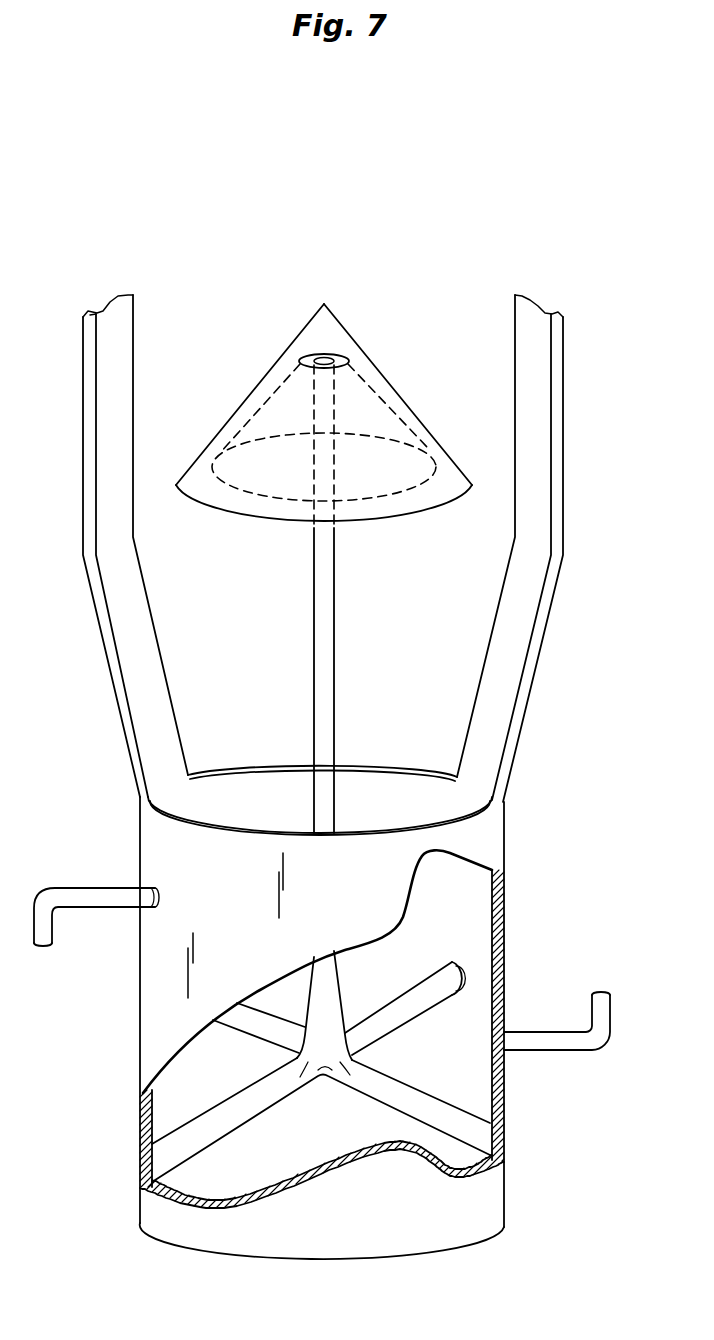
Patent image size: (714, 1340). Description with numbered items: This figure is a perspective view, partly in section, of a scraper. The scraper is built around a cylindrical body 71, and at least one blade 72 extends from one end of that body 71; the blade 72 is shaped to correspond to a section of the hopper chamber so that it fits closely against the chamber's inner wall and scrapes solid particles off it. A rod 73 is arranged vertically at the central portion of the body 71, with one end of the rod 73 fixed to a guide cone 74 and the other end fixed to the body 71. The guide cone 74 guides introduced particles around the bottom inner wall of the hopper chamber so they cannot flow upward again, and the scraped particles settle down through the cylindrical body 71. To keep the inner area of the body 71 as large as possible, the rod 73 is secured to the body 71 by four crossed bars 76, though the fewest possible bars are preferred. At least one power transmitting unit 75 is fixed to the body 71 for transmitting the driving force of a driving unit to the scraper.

The cylindrical body 71 is at (153, 1000).
The blade 72 is at (557, 500).
The rod 73 is at (325, 620).
The guide cone 74 is at (400, 410).
The power transmitting unit 75 is at (65, 893).
The bars 76 is at (197, 1128).